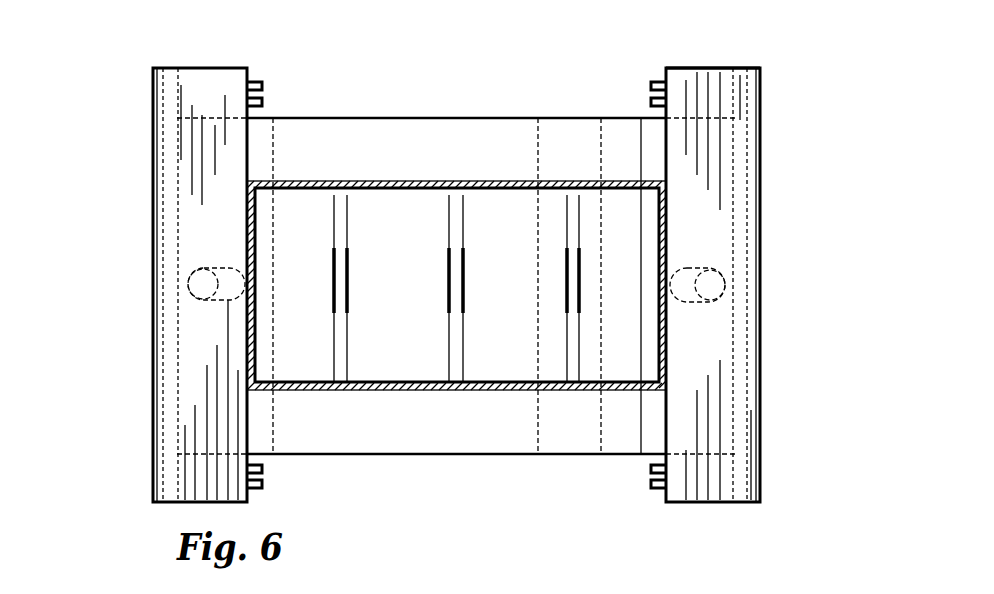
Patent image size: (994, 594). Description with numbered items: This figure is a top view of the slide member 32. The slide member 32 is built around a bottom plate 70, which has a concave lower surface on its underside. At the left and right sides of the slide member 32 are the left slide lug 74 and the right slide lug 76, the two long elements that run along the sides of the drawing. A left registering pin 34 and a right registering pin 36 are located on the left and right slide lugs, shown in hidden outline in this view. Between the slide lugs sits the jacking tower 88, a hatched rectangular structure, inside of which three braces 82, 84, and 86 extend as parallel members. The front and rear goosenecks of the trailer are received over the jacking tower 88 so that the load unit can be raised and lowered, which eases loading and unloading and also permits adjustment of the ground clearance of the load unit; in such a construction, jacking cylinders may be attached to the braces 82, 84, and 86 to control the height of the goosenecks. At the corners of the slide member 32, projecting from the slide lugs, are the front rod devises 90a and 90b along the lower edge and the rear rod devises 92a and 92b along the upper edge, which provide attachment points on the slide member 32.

The slide member 32 is at (717, 158).
The left registering pin 34 is at (188, 284).
The right registering pin 36 is at (723, 278).
The bottom plate 70 is at (489, 442).
The left slide lug 74 is at (168, 455).
The right slide lug 76 is at (755, 475).
The brace 82 is at (333, 272).
The brace 84 is at (447, 272).
The brace 86 is at (566, 272).
The jacking tower 88 is at (352, 392).
The front rod devise 90a is at (262, 468).
The front rod devise 90b is at (650, 483).
The rear rod devise 92a is at (263, 85).
The rear rod devise 92b is at (650, 85).